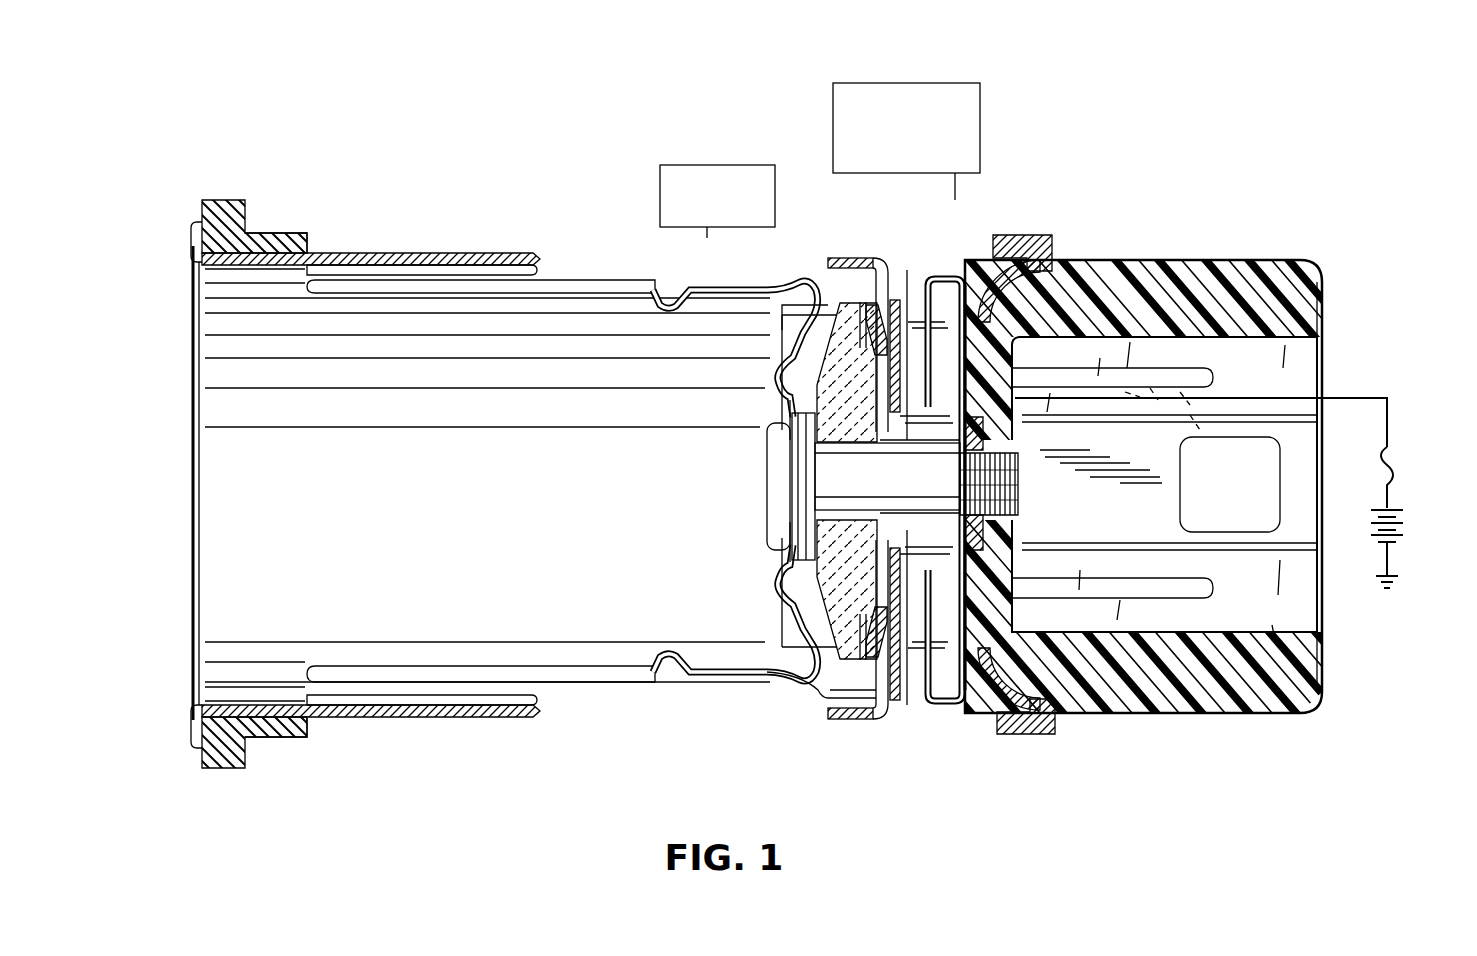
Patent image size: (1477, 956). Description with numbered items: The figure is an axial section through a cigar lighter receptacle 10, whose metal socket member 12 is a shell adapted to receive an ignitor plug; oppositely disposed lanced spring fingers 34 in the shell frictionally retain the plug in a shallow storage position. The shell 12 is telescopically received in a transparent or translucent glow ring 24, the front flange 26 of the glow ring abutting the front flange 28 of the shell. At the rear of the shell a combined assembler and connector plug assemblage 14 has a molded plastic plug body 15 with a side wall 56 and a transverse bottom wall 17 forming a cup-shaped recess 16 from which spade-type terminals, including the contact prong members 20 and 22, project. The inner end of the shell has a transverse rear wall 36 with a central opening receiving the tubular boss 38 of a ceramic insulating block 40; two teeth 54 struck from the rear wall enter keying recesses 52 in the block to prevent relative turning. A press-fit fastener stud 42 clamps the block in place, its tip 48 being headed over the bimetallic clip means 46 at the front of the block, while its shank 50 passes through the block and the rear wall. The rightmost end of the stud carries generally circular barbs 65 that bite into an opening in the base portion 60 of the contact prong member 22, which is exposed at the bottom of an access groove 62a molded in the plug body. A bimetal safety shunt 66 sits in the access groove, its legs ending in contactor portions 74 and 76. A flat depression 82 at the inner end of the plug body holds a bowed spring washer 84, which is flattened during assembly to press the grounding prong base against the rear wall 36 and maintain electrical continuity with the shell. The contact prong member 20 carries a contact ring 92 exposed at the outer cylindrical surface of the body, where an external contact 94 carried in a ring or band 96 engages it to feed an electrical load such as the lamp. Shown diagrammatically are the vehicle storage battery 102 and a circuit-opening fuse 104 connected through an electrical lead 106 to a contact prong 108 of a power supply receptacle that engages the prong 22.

The cigar lighter receptacle 10 is at (608, 246).
The socket member 12 is at (472, 496).
The combined assembler and connector plug assemblage 14 is at (1189, 235).
The molded plastic plug body 15 is at (1297, 293).
The cup-shaped recess 16 is at (1295, 609).
The transverse bottom wall 17 is at (1013, 529).
The third contact prong member 20 is at (1150, 588).
The contact prong member 22 is at (1198, 372).
The glow ring 24 is at (290, 242).
The front flange 26 is at (238, 218).
The front flange 28 is at (192, 245).
The lanced spring fingers 34 is at (425, 256).
The transverse rear wall 36 is at (884, 260).
The tubular boss 38 is at (888, 545).
The ceramic insulating block 40 is at (840, 577).
The press-fit fastener stud 42 is at (746, 471).
The bimetallic clip means 46 is at (712, 290).
The outer end or tip 48 is at (766, 496).
The shank 50 is at (910, 480).
The keying recesses 52 is at (843, 278).
The teeth 54 is at (803, 373).
The side wall 56 is at (1270, 274).
The base portion 60 is at (983, 440).
The transverse groove or relief 62a is at (918, 676).
The circular barbs 65 is at (1020, 484).
The bimetal safety shunt 66 is at (932, 279).
The contactor portion 74 is at (983, 487).
The contactor portion 76 is at (948, 701).
The flat depression 82 is at (900, 300).
The bowed spring washer 84 is at (782, 399).
The contact ring 92 is at (1000, 718).
The external contact 94 is at (1018, 250).
The ring or band 96 is at (1045, 248).
The storage battery 102 is at (1415, 522).
The fuse 104 is at (1393, 456).
The electrical lead 106 is at (1345, 398).
The contact prong 108 is at (1188, 440).